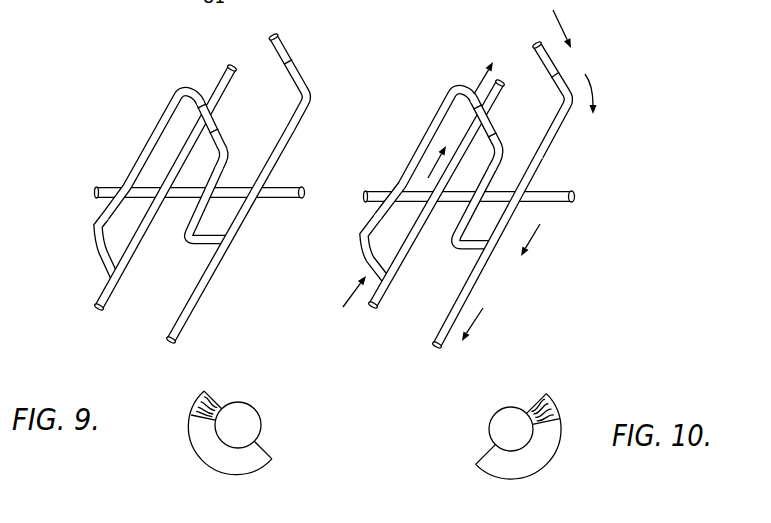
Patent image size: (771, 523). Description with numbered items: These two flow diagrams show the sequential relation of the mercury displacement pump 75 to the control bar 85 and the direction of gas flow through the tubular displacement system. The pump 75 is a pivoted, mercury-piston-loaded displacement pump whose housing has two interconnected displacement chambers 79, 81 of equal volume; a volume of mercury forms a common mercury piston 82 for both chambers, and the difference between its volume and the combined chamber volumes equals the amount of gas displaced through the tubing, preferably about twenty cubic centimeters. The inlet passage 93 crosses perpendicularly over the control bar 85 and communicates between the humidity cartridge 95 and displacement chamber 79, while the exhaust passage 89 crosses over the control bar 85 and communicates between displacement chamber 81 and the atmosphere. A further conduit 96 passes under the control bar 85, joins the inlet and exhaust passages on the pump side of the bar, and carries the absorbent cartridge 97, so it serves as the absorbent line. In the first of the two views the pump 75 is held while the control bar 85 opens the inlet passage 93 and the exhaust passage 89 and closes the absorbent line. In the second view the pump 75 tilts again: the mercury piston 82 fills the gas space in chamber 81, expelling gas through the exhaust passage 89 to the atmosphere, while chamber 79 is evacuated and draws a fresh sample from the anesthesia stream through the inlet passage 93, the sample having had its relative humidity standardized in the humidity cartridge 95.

In FIG. 9, the mercury displacement pump 75 is at (261, 434).
In FIG. 10, the mercury displacement pump 75 is at (490, 417).
In FIG. 9, the displacement chamber 79 is at (243, 468).
In FIG. 10, the displacement chamber 79 is at (555, 413).
In FIG. 9, the displacement chamber 81 is at (205, 391).
In FIG. 10, the displacement chamber 81 is at (498, 470).
In FIG. 9, the mercury piston 82 is at (223, 460).
In FIG. 10, the mercury piston 82 is at (532, 460).
In FIG. 9, the control bar 85 is at (288, 199).
In FIG. 10, the control bar 85 is at (484, 213).
In FIG. 9, the exhaust passage 89 is at (107, 293).
In FIG. 10, the exhaust passage 89 is at (436, 203).
In FIG. 9, the inlet passage 93 is at (181, 338).
In FIG. 10, the inlet passage 93 is at (485, 266).
In FIG. 9, the humidity cartridge 95 is at (290, 62).
In FIG. 10, the humidity cartridge 95 is at (567, 100).
In FIG. 9, the conduit 96 is at (195, 245).
In FIG. 10, the conduit 96 is at (459, 221).
In FIG. 9, the absorbent cartridge 97 is at (220, 117).
In FIG. 10, the absorbent cartridge 97 is at (499, 135).